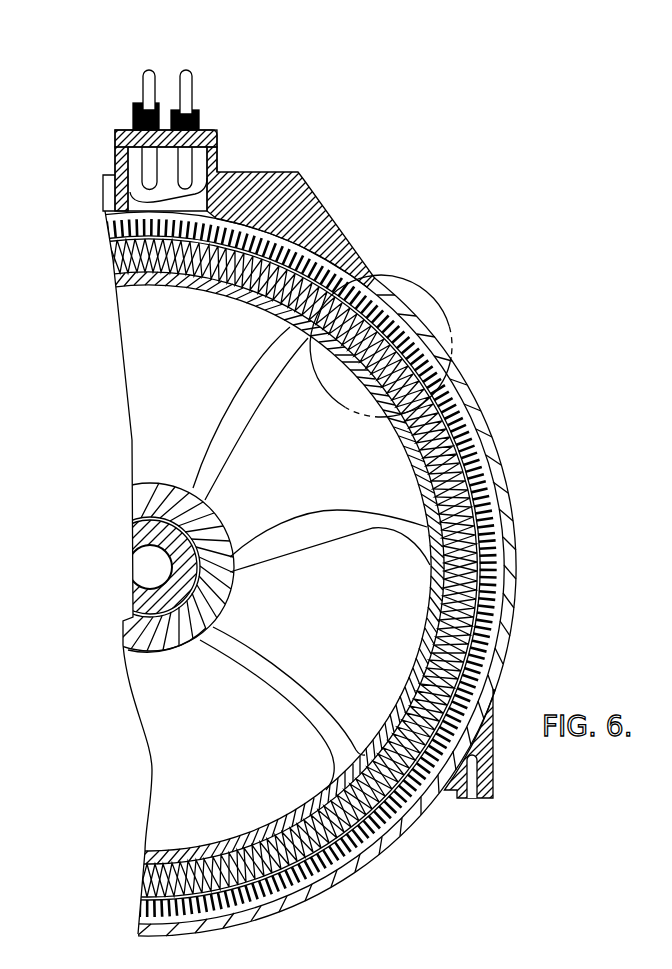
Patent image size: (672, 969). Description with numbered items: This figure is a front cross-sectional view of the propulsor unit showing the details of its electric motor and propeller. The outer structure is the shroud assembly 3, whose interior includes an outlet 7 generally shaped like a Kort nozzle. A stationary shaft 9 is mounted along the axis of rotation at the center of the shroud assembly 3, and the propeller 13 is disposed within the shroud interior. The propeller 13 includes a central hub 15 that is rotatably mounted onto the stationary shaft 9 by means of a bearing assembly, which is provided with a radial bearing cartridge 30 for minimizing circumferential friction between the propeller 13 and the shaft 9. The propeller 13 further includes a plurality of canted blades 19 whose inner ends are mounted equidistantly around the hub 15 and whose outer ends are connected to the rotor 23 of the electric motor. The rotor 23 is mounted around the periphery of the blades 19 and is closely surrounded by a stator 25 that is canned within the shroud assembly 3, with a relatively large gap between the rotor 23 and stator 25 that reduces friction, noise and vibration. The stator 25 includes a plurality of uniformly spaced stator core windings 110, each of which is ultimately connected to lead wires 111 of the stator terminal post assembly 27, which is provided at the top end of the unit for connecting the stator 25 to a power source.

The shroud assembly 3 is at (375, 263).
The outlet 7 is at (436, 300).
The stationary shaft 9 is at (176, 483).
The propeller 13 is at (211, 397).
The hub 15 is at (212, 505).
The canted blades 19 is at (293, 677).
The rotor 23 is at (428, 626).
The stator 25 is at (503, 607).
The stator terminal post assembly 27 is at (222, 146).
The radial bearing cartridge 30 is at (181, 636).
The stator core windings 110 is at (337, 270).
The lead wires 111 is at (158, 176).